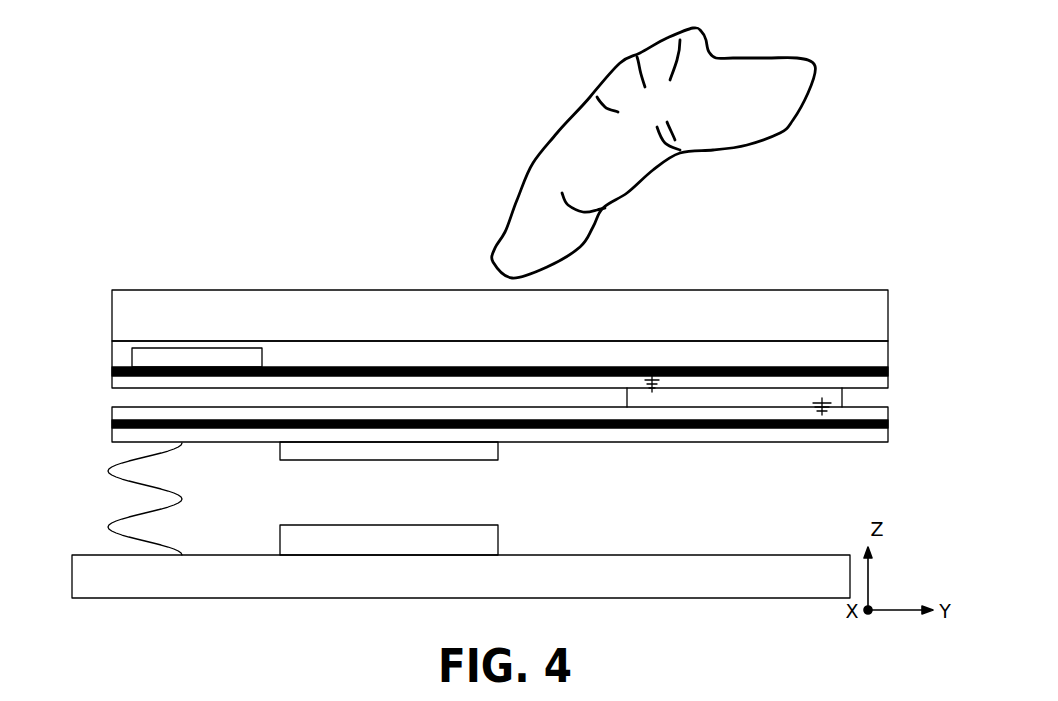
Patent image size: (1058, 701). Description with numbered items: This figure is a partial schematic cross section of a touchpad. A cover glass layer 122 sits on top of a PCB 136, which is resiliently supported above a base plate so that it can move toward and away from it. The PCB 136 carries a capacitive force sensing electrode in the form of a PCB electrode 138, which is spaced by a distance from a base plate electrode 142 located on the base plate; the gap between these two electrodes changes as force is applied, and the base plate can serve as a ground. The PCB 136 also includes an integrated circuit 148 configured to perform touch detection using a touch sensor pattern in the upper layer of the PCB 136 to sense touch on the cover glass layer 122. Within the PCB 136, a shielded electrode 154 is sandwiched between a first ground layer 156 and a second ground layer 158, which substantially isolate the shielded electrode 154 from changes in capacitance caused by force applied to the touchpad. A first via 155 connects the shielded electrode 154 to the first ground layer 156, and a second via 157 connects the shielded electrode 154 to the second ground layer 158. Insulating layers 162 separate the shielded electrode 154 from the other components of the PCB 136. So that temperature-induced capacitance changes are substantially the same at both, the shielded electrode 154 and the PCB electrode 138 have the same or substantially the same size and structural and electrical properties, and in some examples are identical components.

The cover glass layer 122 is at (888, 330).
The PCB 136 is at (70, 335).
The PCB electrode 138 is at (482, 460).
The base plate electrode 142 is at (303, 525).
The integrated circuit 148 is at (191, 347).
The shielded electrode 154 is at (747, 400).
The first via 155 is at (653, 392).
The first ground layer 156 is at (888, 370).
The second via 157 is at (822, 398).
The second ground layer 158 is at (888, 420).
The insulating layers 162 is at (112, 362).